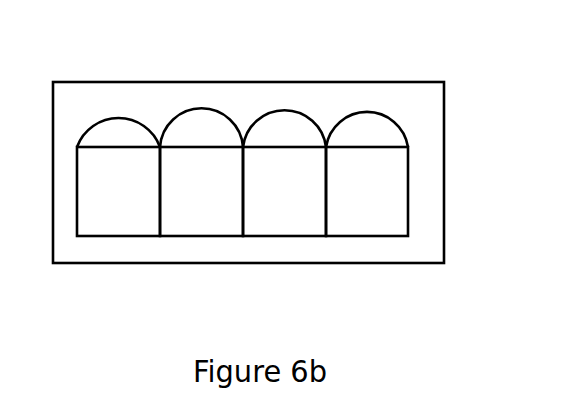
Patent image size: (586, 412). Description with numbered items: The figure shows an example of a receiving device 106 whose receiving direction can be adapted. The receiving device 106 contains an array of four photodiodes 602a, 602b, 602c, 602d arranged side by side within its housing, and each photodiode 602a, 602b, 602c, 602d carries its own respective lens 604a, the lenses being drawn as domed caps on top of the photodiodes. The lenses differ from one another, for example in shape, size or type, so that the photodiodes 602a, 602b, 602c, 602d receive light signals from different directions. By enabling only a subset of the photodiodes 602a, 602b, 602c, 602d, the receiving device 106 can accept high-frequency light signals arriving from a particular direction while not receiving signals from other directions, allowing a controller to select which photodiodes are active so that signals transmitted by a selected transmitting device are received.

The receiving device 106 is at (444, 82).
The photodiode 602a is at (113, 236).
The photodiode 602b is at (206, 236).
The photodiode 602c is at (280, 236).
The photodiode 602d is at (373, 236).
The lens 604a is at (110, 118).